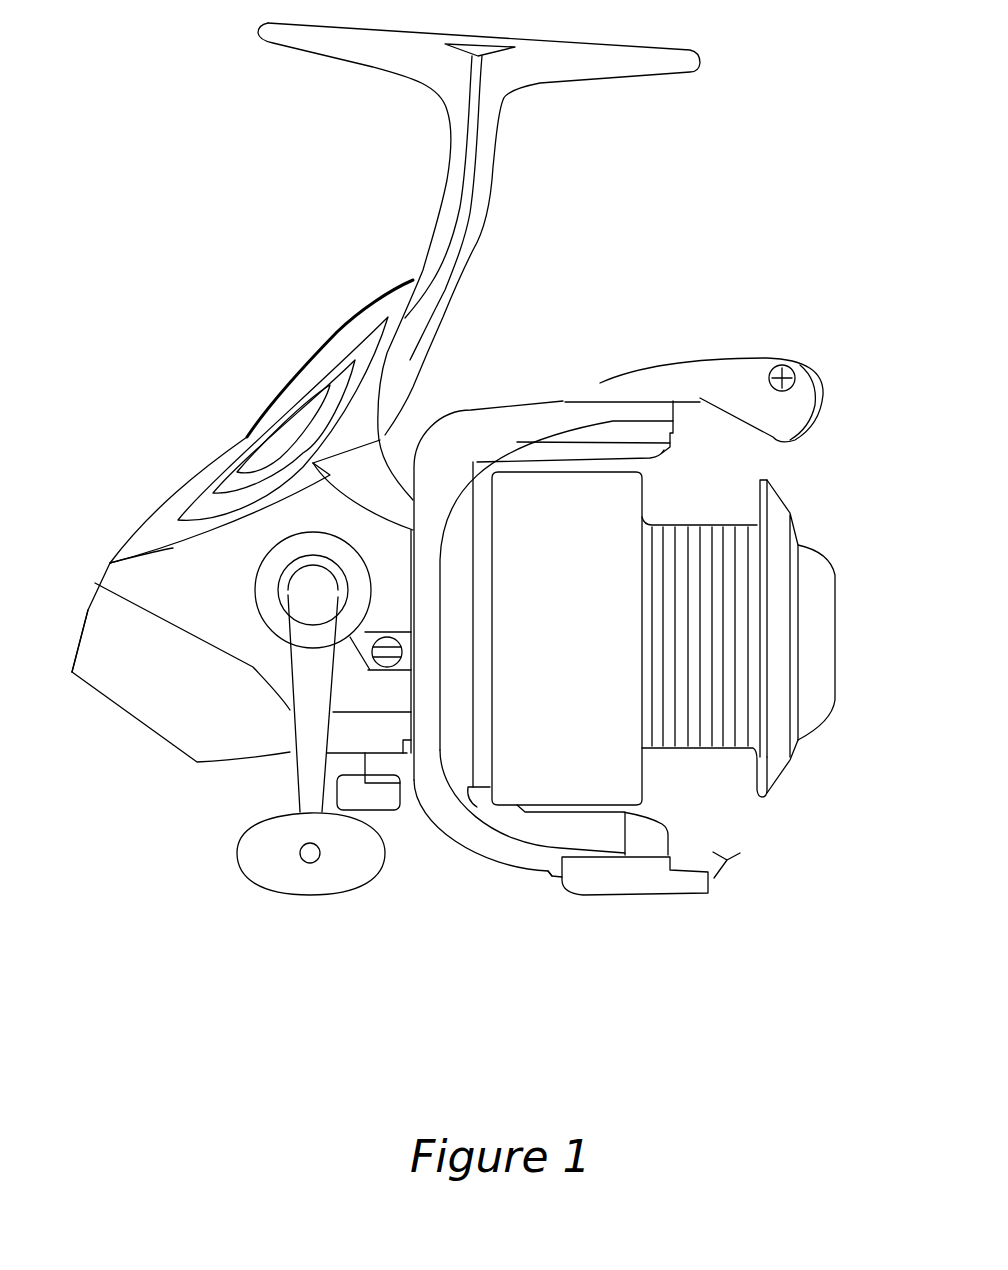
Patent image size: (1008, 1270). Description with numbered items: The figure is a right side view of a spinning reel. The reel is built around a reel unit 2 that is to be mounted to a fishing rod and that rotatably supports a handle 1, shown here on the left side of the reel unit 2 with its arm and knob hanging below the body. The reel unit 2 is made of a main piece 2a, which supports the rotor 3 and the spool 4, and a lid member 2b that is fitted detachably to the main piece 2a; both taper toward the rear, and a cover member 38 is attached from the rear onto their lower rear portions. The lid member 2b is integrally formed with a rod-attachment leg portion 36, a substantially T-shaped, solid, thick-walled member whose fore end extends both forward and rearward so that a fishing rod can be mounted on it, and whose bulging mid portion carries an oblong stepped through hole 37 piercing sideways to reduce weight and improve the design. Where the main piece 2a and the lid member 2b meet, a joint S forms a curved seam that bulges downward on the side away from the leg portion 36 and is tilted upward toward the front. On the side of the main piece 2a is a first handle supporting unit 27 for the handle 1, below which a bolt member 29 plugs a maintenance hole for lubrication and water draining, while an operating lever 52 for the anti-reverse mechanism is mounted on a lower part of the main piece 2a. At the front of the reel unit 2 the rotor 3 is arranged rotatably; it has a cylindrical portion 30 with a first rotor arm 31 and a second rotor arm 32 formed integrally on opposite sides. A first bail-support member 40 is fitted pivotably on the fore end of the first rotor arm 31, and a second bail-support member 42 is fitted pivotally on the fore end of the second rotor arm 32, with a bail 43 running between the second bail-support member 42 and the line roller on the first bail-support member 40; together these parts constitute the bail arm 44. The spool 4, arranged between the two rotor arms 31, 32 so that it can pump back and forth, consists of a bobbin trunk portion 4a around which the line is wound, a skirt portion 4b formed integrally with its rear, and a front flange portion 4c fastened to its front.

The handle 1 is at (303, 783).
The reel unit 2 is at (397, 197).
The main piece 2a is at (137, 582).
The lid member 2b is at (247, 423).
The rotor 3 is at (438, 800).
The spool 4 is at (693, 727).
The bobbin trunk portion 4a is at (707, 525).
The skirt portion 4b is at (548, 497).
The front flange portion 4c is at (767, 480).
The first handle supporting unit 27 is at (265, 608).
The bolt member 29 is at (390, 663).
The cylindrical portion 30 is at (483, 780).
The first rotor arm 31 is at (477, 430).
The second rotor arm 32 is at (528, 867).
The rod-attachment leg portion 36 is at (413, 290).
The through hole 37 is at (304, 384).
The cover member 38 is at (140, 698).
The first bail-support member 40 is at (713, 380).
The second bail-support member 42 is at (663, 890).
The bail 43 is at (730, 870).
The bail arm 44 is at (830, 375).
The operating lever 52 is at (378, 800).
The joint S is at (173, 548).